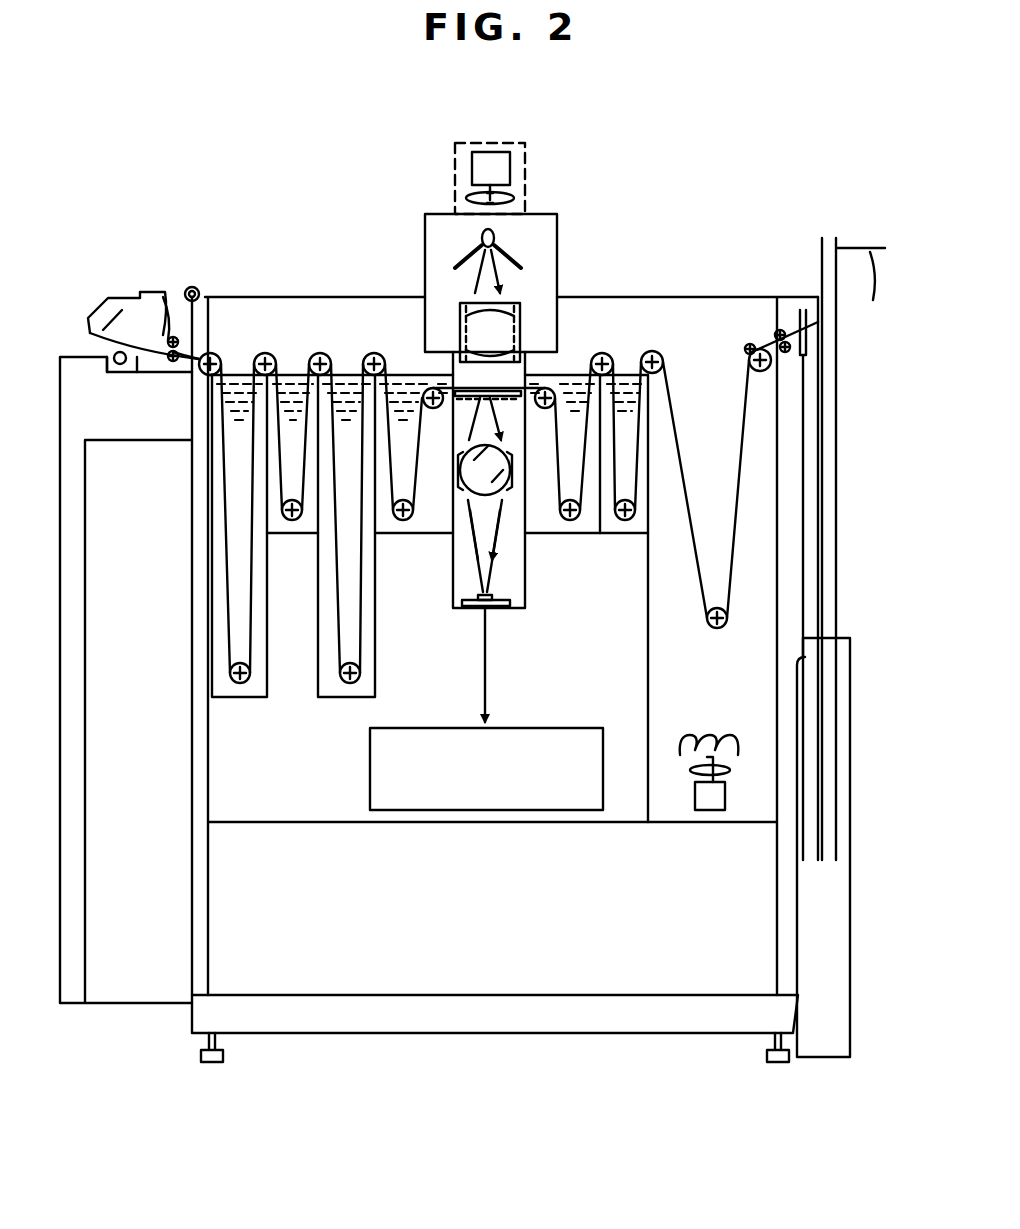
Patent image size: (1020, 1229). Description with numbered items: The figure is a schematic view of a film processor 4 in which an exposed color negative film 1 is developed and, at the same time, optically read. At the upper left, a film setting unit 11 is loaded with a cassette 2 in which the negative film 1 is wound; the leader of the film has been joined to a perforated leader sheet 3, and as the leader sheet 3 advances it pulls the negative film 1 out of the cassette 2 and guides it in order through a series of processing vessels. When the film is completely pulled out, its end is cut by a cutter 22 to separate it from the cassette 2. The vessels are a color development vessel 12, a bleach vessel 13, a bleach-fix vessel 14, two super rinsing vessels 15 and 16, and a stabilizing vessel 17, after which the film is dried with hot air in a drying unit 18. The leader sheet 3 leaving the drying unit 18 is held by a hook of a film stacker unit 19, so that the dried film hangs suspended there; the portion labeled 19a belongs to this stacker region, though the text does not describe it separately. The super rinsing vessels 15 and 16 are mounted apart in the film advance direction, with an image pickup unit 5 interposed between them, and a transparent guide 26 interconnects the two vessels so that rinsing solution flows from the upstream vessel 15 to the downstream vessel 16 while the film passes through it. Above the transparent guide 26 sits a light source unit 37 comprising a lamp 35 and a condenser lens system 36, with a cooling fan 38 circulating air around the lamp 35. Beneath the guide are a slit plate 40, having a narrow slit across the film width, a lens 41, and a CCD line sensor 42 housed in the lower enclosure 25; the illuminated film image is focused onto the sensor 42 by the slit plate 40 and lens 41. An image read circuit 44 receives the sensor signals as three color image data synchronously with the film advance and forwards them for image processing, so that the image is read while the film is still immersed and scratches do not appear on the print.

The negative film 1 is at (163, 297).
The cassette 2 is at (92, 333).
The leader sheet 3 is at (838, 238).
The film processor 4 is at (398, 1045).
The image pickup unit 5 is at (456, 660).
The film setting unit 11 is at (135, 300).
The color development vessel 12 is at (212, 600).
The bleach vessel 13 is at (293, 545).
The bleach-fix vessel 14 is at (345, 700).
The super rinsing vessel 15 is at (403, 540).
The super rinsing vessel 16 is at (558, 540).
The stabilizing vessel 17 is at (625, 540).
The drying unit 18 is at (680, 625).
The film stacker unit 19 is at (845, 332).
The film receiving portion 19a is at (882, 296).
The cutter 22 is at (150, 370).
The sensor housing 25 is at (535, 615).
The transparent guide 26 is at (520, 382).
The lamp 35 is at (475, 240).
The condenser lens system 36 is at (462, 312).
The light source unit 37 is at (437, 208).
The cooling fan 38 is at (512, 196).
The slit plate 40 is at (455, 385).
The lens 41 is at (468, 482).
The CCD line sensor 42 is at (472, 612).
The image read circuit 44 is at (370, 780).